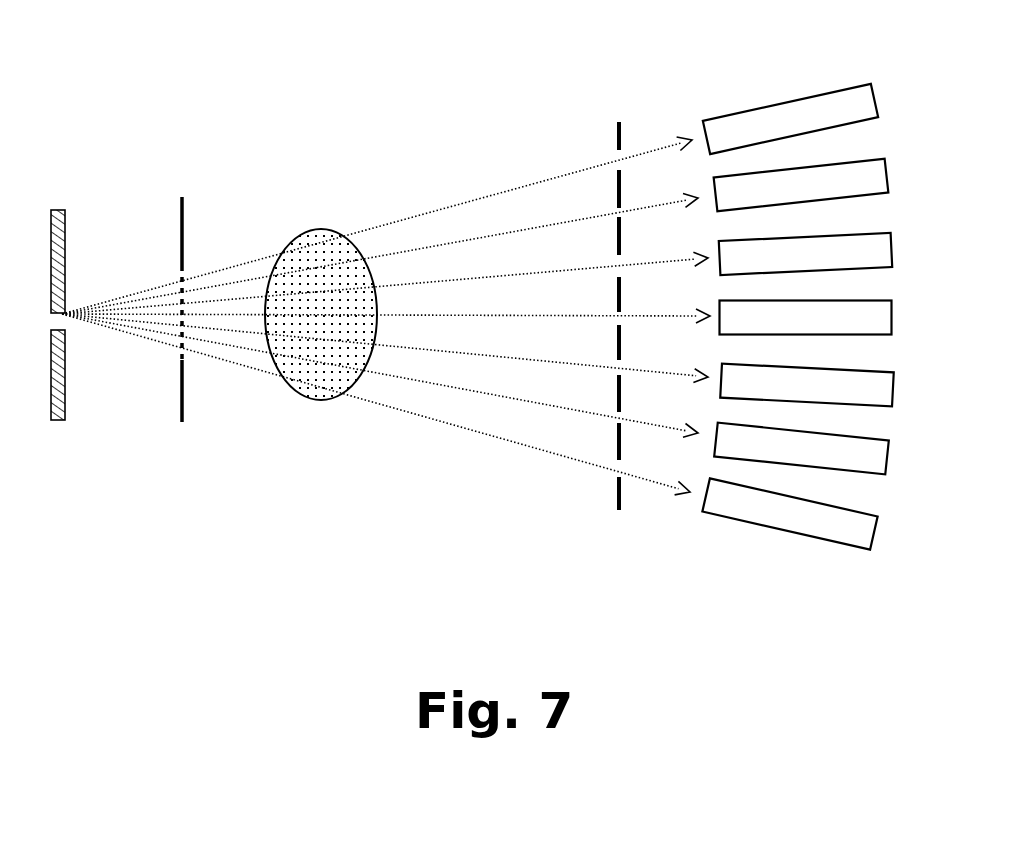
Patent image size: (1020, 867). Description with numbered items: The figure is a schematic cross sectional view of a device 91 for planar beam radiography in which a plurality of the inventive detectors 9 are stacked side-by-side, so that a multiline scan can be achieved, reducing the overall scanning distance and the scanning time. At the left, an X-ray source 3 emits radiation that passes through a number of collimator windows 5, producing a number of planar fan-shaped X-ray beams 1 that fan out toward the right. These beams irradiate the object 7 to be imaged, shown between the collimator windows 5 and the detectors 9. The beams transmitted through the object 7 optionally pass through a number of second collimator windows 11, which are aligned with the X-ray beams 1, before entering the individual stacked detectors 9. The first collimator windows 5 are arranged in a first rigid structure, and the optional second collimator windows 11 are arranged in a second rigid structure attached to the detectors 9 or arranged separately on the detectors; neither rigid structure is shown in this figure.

The device 91 is at (308, 77).
The X-ray source 3 is at (62, 413).
The collimator windows 5 is at (183, 413).
The object 7 is at (345, 393).
The planar fan-shaped X-ray beams 1 is at (478, 197).
The second collimator windows 11 is at (620, 498).
The detectors 9 is at (738, 111).